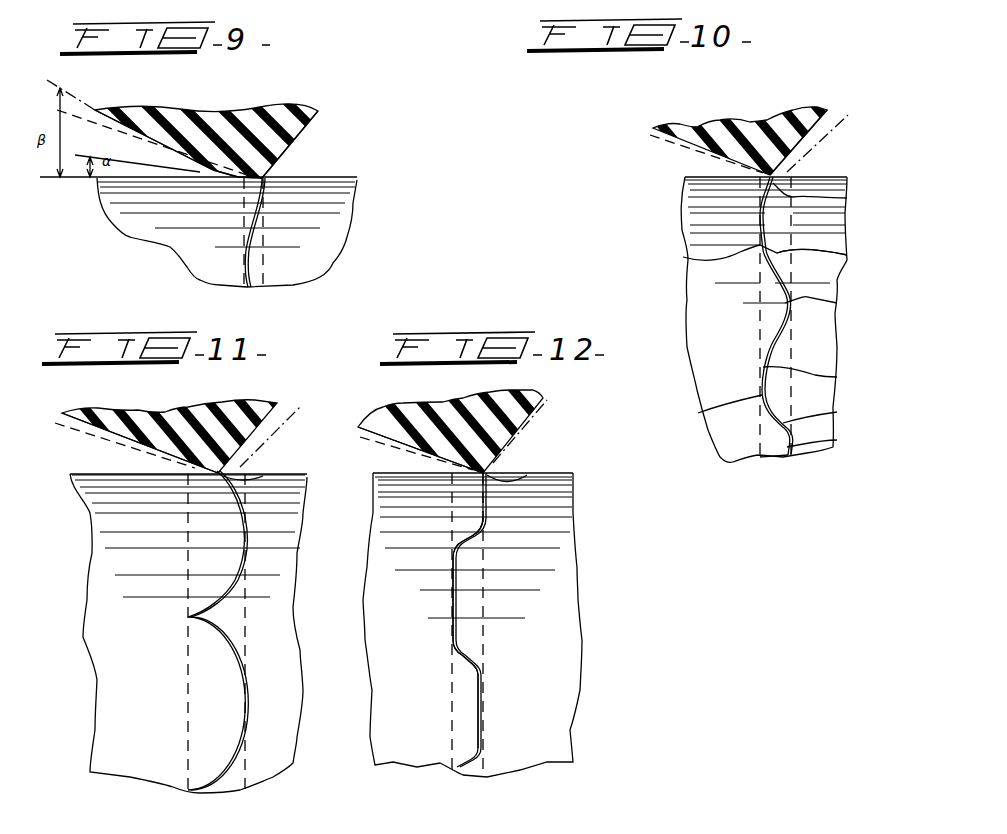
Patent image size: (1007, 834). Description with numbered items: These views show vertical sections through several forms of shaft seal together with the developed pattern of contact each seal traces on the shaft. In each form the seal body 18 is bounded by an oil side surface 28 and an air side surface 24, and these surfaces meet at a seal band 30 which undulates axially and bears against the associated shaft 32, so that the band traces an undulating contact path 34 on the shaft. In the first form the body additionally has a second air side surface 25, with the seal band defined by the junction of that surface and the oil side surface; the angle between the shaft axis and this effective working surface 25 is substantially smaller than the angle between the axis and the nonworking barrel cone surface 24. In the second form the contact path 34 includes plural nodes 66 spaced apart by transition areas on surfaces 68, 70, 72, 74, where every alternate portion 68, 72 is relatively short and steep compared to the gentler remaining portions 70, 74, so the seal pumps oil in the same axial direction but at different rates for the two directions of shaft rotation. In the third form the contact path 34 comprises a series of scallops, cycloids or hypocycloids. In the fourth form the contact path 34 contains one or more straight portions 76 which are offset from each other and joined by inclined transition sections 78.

In FIG. 9, the seal body 18 is at (222, 107).
In FIG. 10, the seal body 18 is at (753, 130).
In FIG. 9, the air side surface 24 is at (128, 128).
In FIG. 11, the air side surface 24 is at (137, 447).
In FIG. 12, the air side surface 24 is at (412, 450).
In FIG. 9, the air side surface 25 is at (215, 172).
In FIG. 9, the oil side surface 28 is at (305, 115).
In FIG. 10, the oil side surface 28 is at (814, 142).
In FIG. 11, the oil side surface 28 is at (262, 422).
In FIG. 12, the oil side surface 28 is at (510, 430).
In FIG. 10, the seal band 30 is at (847, 198).
In FIG. 11, the seal band 30 is at (267, 475).
In FIG. 12, the seal band 30 is at (533, 472).
In FIG. 10, the shaft 32 is at (705, 300).
In FIG. 9, the contact path 34 is at (249, 237).
In FIG. 10, the contact path 34 is at (837, 350).
In FIG. 11, the contact path 34 is at (243, 552).
In FIG. 12, the contact path 34 is at (483, 522).
In FIG. 10, the nodes 66 is at (683, 257).
In FIG. 10, the transition surface 68 is at (837, 254).
In FIG. 10, the transition surface 70 is at (837, 377).
In FIG. 10, the transition surface 72 is at (837, 412).
In FIG. 10, the transition surface 74 is at (763, 455).
In FIG. 12, the straight portions 76 is at (455, 607).
In FIG. 12, the inclined transition sections 78 is at (470, 545).